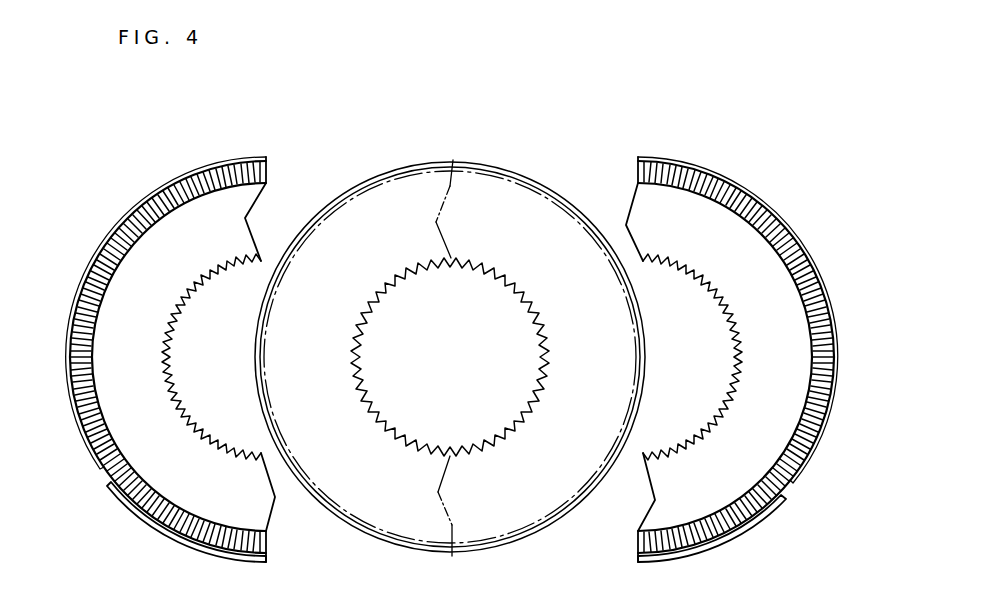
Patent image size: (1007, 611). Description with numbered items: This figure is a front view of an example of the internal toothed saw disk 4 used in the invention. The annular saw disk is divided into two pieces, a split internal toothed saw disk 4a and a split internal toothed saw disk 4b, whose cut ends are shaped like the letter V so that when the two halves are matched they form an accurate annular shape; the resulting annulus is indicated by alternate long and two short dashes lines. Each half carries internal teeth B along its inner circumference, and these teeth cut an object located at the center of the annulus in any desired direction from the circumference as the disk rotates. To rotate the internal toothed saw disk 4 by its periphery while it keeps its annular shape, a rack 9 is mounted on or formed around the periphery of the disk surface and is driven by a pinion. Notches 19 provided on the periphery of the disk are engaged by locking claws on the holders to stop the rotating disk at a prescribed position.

The internal toothed saw disk 4 is at (528, 100).
The split internal toothed saw disk 4a is at (237, 205).
The split internal toothed saw disk 4b is at (640, 212).
The rack 9 is at (175, 183).
The notches 19 is at (113, 483).
The internal teeth B is at (180, 307).